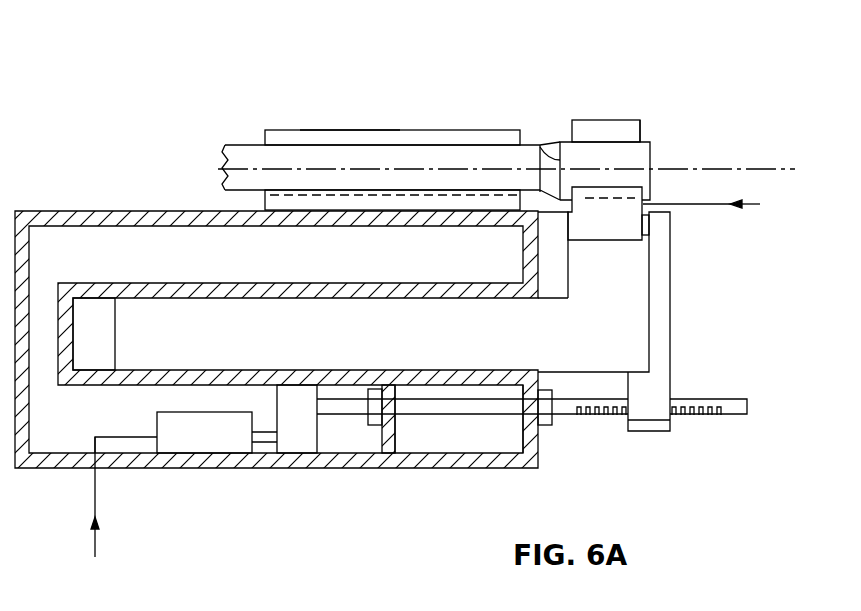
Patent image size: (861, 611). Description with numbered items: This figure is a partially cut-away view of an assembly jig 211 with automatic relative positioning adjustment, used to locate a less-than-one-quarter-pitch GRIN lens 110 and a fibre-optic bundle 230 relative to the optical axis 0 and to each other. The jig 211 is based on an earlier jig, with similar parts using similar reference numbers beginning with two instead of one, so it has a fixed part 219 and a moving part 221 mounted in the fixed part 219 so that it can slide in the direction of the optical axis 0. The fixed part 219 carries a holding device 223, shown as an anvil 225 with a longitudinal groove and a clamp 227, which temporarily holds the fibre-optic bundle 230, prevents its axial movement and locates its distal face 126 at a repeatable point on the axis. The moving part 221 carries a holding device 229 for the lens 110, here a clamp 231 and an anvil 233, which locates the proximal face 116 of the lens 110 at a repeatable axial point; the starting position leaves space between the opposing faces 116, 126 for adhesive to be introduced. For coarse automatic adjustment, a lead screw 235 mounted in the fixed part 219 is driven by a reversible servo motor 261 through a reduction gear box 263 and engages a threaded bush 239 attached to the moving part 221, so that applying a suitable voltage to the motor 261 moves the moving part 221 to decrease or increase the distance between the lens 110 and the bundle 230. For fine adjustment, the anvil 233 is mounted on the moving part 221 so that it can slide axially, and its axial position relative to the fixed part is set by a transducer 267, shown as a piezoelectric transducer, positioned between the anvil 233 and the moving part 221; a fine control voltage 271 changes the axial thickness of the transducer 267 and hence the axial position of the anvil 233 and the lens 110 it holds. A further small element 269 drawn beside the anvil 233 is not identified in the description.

The optical axis 0 is at (788, 162).
The GRIN lens 110 is at (645, 140).
The proximal face of the lens 116 is at (551, 147).
The distal face of the fibre-optic bundle 126 is at (530, 147).
The assembly jig 211 is at (398, 498).
The fixed part 219 is at (420, 468).
The moving part 221 is at (670, 372).
The holding device 223 is at (405, 117).
The anvil 225 is at (265, 207).
The clamp 227 is at (347, 128).
The holding device 229 is at (650, 100).
The fibre-optic bundle 230 is at (243, 145).
The clamp 231 is at (621, 241).
The anvil 233 is at (587, 120).
The lead screw 235 is at (592, 416).
The threaded bush 239 is at (650, 431).
The reversible servo motor 261 is at (157, 441).
The reduction gear box 263 is at (292, 448).
The transducer 267 is at (95, 497).
The fine adjustment element 269 is at (650, 225).
The fine control voltage 271 is at (693, 207).